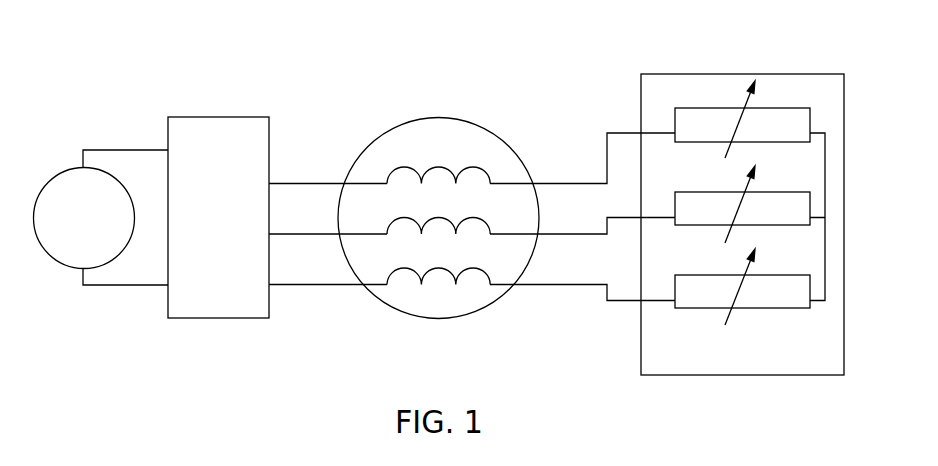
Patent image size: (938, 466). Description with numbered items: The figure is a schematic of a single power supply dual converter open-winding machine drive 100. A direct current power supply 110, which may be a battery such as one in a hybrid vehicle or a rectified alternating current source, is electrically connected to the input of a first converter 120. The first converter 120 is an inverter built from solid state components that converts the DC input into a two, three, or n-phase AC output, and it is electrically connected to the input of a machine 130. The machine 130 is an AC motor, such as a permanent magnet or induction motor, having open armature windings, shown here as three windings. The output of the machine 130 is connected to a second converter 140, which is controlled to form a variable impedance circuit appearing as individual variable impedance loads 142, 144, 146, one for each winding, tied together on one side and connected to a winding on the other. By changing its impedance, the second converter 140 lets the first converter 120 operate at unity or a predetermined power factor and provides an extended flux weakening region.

The single power supply dual converter open-winding machine drive 100 is at (126, 52).
The direct current power supply 110 is at (103, 232).
The first converter 120 is at (237, 232).
The machine 130 is at (442, 115).
The second converter 140 is at (762, 360).
The variable impedance load 142 is at (803, 134).
The variable impedance load 144 is at (803, 218).
The variable impedance load 146 is at (803, 300).